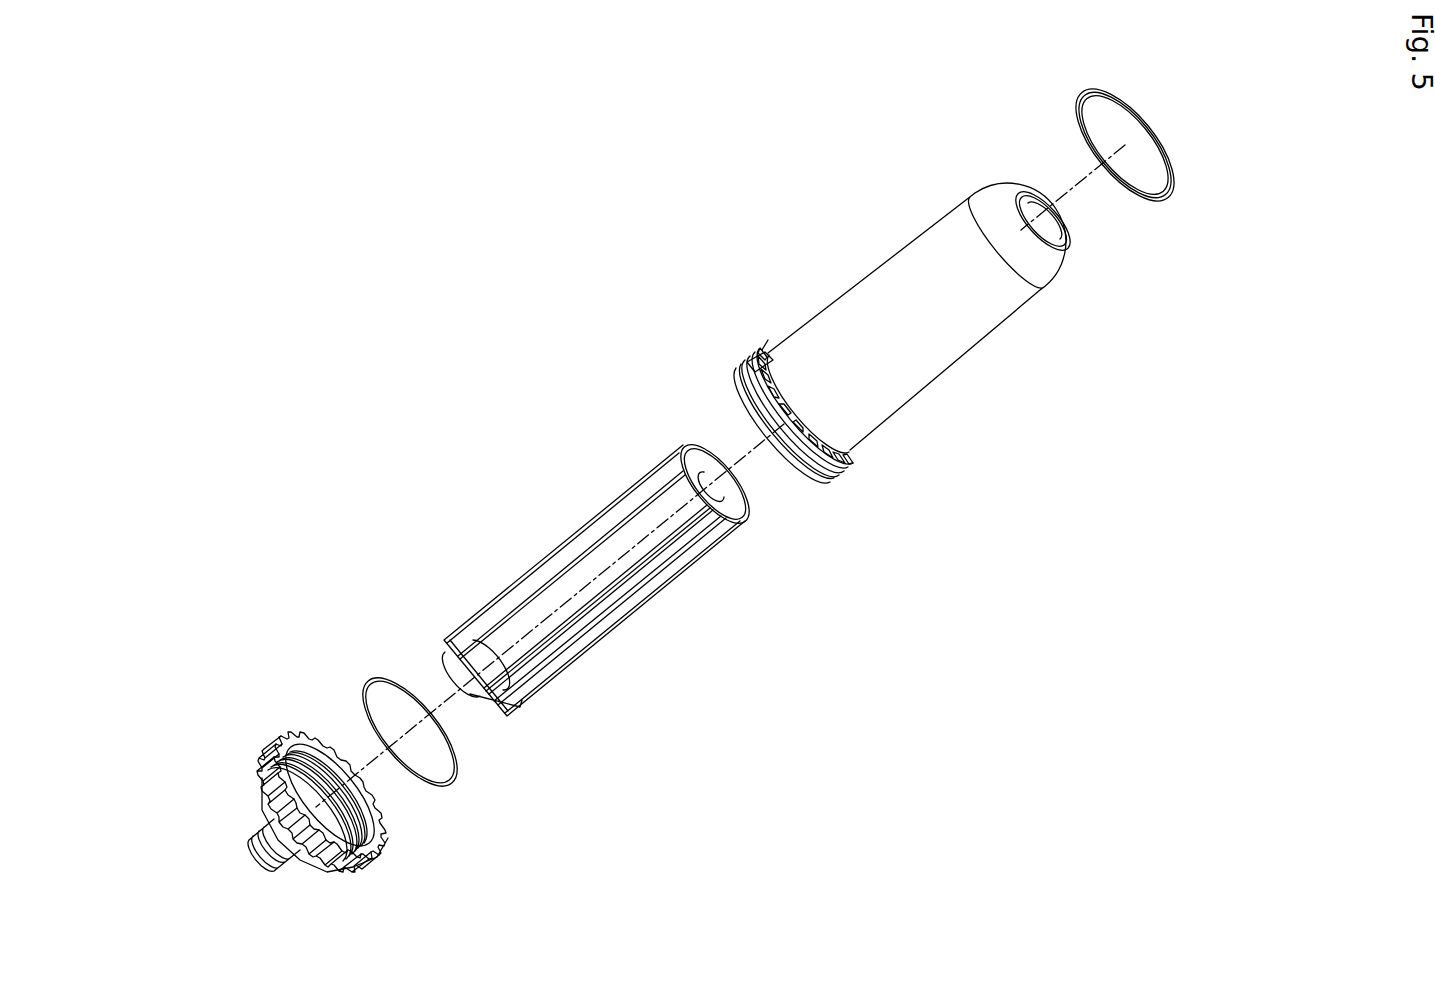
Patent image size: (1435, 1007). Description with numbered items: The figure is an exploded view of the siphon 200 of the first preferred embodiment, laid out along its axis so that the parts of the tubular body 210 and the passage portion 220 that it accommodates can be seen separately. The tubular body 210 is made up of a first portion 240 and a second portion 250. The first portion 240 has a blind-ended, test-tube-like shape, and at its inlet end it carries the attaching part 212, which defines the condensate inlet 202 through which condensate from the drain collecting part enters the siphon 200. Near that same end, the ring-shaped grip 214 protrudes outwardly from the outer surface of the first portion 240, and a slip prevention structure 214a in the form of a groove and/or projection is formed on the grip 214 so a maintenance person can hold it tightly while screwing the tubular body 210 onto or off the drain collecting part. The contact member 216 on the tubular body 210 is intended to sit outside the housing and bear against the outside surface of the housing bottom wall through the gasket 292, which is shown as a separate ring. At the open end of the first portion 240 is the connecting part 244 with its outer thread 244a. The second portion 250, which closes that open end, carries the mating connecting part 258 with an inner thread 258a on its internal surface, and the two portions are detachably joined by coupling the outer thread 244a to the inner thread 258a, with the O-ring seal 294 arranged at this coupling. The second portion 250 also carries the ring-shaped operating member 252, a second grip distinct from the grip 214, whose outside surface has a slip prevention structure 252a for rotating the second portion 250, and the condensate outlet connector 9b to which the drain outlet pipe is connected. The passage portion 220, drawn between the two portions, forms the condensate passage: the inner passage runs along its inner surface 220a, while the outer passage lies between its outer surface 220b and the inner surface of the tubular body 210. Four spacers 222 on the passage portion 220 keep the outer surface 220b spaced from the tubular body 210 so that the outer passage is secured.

The siphon 200 is at (1273, 308).
The condensate inlet 202 is at (1070, 214).
The tubular body 210 is at (1003, 455).
The attaching part 212 is at (1038, 205).
The grip 214 is at (730, 353).
The slip prevention structure 214a is at (740, 385).
The contact member 216 is at (768, 345).
The passage portion 220 is at (659, 617).
The inner surface of the passage portion 220a is at (742, 505).
The outer surface of the passage portion 220b is at (598, 548).
The spacer 222 is at (598, 612).
The first portion 240 is at (911, 436).
The connecting part 244 is at (712, 406).
The outer thread 244a is at (726, 423).
The second portion 250 is at (406, 838).
The operating member 252 is at (227, 739).
The slip prevention structure 252a is at (270, 775).
The connecting part 258 is at (358, 797).
The inner thread 258a is at (330, 740).
The gasket 292 is at (1165, 197).
The O-ring seal 294 is at (366, 678).
The condensate outlet connector 9b is at (250, 832).